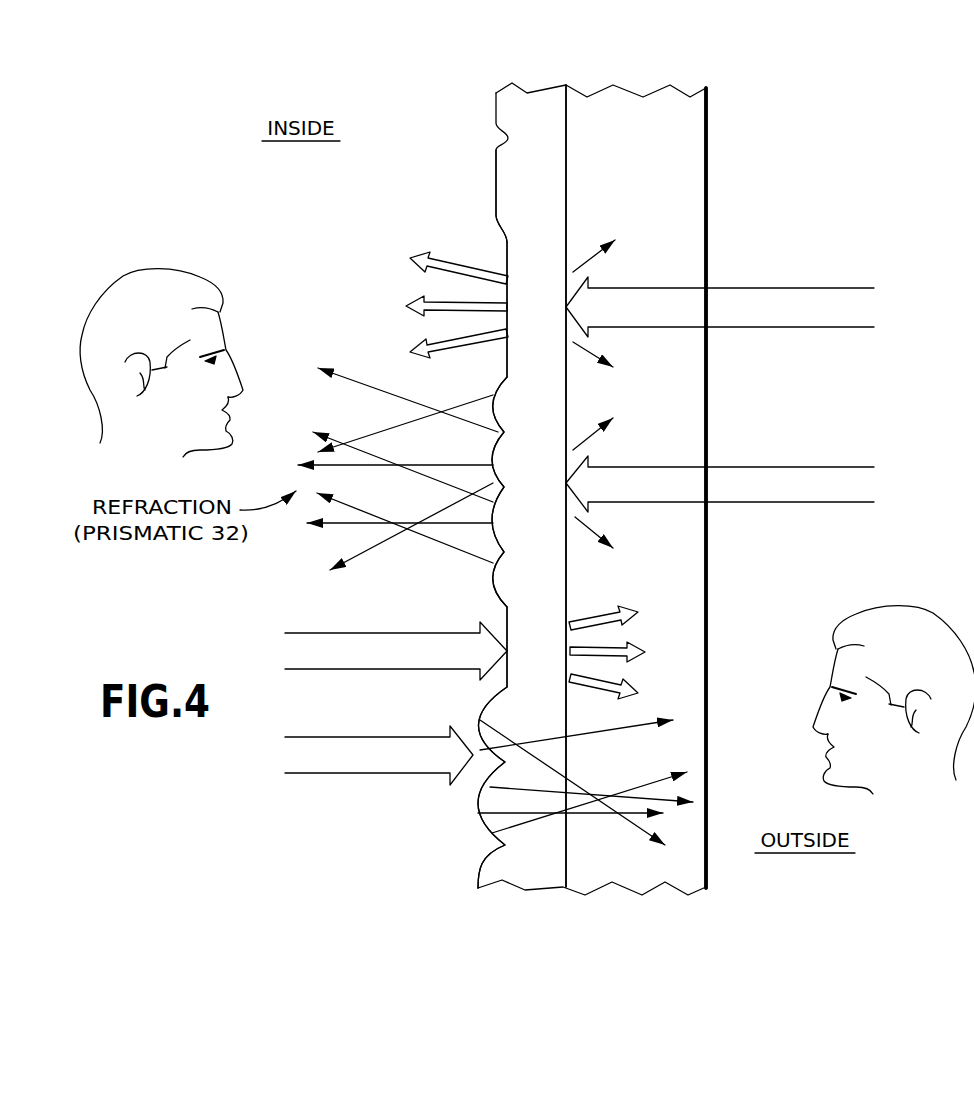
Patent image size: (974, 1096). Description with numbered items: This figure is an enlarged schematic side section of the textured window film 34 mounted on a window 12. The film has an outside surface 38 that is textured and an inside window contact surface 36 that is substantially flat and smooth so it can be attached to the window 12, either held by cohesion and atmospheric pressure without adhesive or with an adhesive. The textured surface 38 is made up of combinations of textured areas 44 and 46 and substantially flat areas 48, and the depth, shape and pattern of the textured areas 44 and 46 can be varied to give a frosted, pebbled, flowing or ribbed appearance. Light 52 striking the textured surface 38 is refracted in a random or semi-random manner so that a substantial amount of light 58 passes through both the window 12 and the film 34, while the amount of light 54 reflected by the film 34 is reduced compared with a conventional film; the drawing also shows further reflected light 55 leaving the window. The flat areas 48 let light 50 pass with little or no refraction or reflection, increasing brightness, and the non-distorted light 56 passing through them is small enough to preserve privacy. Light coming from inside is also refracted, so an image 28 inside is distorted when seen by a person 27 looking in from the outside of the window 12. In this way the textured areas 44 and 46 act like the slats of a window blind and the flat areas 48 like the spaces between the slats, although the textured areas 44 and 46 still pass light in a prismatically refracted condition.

The window 12 is at (688, 147).
The person 27 is at (906, 608).
The image 28 is at (147, 272).
The textured window film 34 is at (548, 212).
The inside window contact surface 36 is at (566, 170).
The outside surface 38 is at (496, 180).
The textured area 44 is at (496, 215).
The textured area 46 is at (492, 578).
The flat areas 48 is at (506, 255).
The light 50 is at (803, 287).
The light 52 is at (803, 465).
The reflected light 54 is at (590, 441).
The reflected light 55 is at (597, 266).
The non-distorted light 56 is at (440, 279).
The light 58 is at (347, 553).